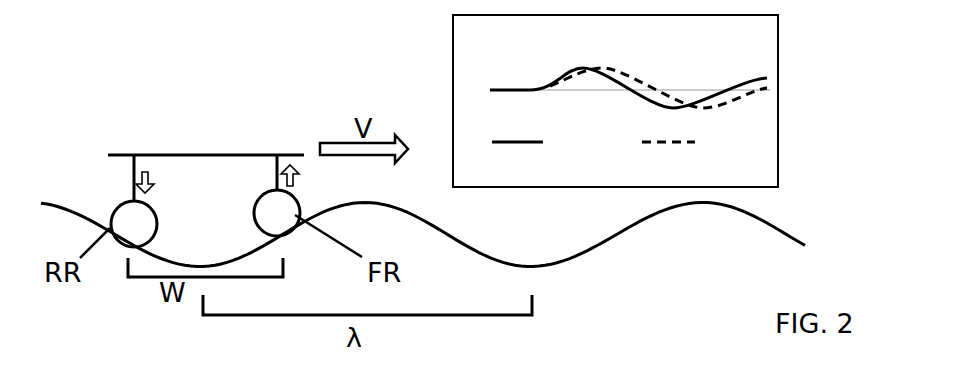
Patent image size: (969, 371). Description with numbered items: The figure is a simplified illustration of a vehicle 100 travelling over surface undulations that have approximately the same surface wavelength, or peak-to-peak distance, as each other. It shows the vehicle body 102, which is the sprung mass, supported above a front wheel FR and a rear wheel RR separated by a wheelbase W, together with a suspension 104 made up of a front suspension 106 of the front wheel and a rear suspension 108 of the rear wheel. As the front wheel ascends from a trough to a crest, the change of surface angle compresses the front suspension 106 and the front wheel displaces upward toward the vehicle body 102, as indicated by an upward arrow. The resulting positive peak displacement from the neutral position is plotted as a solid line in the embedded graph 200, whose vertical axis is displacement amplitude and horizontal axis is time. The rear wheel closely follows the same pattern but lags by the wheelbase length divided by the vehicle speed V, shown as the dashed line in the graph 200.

The vehicle 100 is at (227, 140).
The vehicle body 102 is at (217, 155).
The suspension 104 is at (313, 182).
The front suspension 106 is at (275, 170).
The rear suspension 108 is at (132, 172).
The embedded graph 200 is at (778, 63).